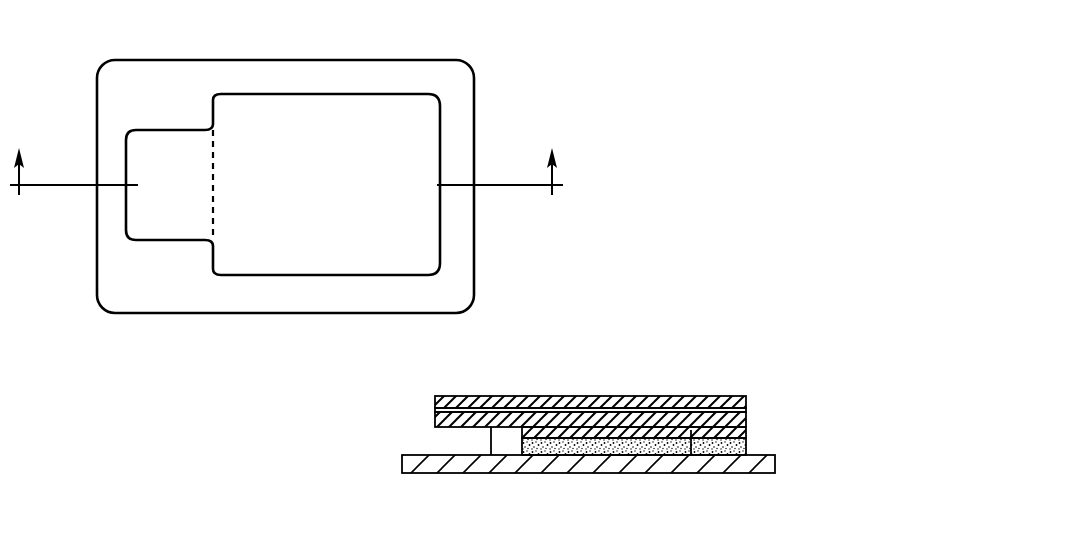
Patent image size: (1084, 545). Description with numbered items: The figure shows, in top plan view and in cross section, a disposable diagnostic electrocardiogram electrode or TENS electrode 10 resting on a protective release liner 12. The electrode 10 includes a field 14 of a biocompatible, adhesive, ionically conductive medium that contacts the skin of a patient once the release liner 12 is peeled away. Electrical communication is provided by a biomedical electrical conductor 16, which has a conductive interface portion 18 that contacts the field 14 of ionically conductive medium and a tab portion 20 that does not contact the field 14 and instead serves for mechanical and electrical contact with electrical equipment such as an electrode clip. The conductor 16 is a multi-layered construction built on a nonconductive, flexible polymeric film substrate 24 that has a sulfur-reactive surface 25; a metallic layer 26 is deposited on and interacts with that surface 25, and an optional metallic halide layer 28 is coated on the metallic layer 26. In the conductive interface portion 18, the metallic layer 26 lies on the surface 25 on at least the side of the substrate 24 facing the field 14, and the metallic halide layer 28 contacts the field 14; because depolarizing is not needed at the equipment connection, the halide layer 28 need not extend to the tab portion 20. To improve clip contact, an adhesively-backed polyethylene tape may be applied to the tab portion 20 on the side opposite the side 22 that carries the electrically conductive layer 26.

In FIG. 2, the electrode 10 is at (494, 66).
In FIG. 3, the electrode 10 is at (688, 353).
In FIG. 2, the release liner 12 is at (110, 113).
In FIG. 3, the release liner 12 is at (410, 460).
In FIG. 3, the field of ionically conductive medium 14 is at (748, 448).
In FIG. 2, the biomedical electrical conductor 16 is at (167, 250).
In FIG. 3, the biomedical electrical conductor 16 is at (571, 407).
In FIG. 2, the conductive interface portion 18 is at (383, 225).
In FIG. 3, the conductive interface portion 18 is at (746, 393).
In FIG. 2, the tab portion 20 is at (163, 157).
In FIG. 3, the tab portion 20 is at (520, 393).
In FIG. 3, the side having the electrically conductive layer 22 is at (491, 455).
In FIG. 2, the polymeric film substrate 24 is at (418, 240).
In FIG. 3, the polymeric film substrate 24 is at (437, 400).
In FIG. 3, the sulfur-reactive surface 25 is at (435, 410).
In FIG. 3, the metallic layer 26 is at (437, 421).
In FIG. 3, the metallic halide layer 28 is at (691, 455).